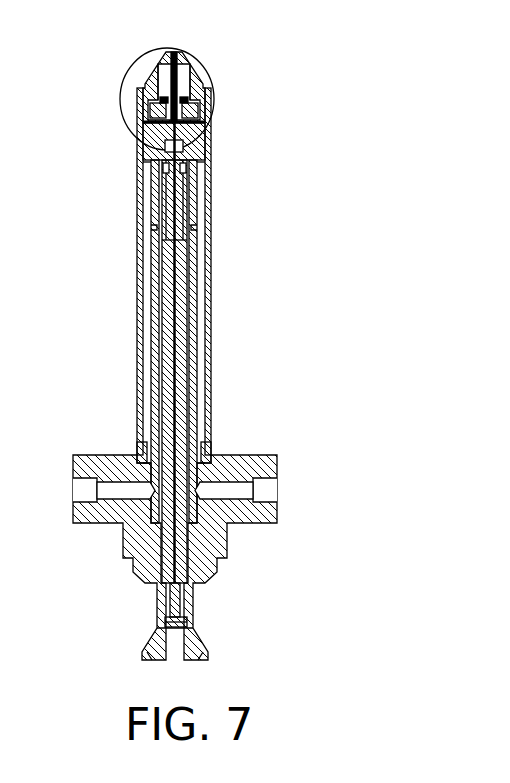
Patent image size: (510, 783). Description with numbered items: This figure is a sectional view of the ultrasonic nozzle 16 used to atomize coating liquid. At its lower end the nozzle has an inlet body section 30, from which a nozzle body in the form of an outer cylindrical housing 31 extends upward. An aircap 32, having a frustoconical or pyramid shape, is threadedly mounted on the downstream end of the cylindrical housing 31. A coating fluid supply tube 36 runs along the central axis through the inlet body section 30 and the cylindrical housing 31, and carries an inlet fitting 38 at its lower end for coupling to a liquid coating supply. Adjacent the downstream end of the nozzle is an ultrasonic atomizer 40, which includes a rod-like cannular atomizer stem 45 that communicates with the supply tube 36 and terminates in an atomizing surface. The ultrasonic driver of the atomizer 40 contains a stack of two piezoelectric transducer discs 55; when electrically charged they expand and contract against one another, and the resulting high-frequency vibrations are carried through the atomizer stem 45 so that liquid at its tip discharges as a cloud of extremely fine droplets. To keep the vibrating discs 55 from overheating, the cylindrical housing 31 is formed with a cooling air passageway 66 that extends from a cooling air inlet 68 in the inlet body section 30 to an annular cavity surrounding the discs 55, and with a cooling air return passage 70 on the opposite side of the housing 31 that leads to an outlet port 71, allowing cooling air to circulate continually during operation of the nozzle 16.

The ultrasonic nozzle 16 is at (126, 305).
The inlet body section 30 is at (104, 518).
The outer cylindrical housing 31 is at (209, 332).
The aircap 32 is at (219, 83).
The coating fluid supply tube 36 is at (194, 366).
The inlet fitting 38 is at (190, 638).
The ultrasonic atomizer 40 is at (198, 107).
The atomizer stem 45 is at (167, 53).
The piezoelectric transducer discs 55 is at (143, 111).
The cooling air passageway 66 is at (152, 353).
The cooling air inlet 68 is at (85, 490).
The cooling air return passage 70 is at (200, 310).
The outlet port 71 is at (224, 486).